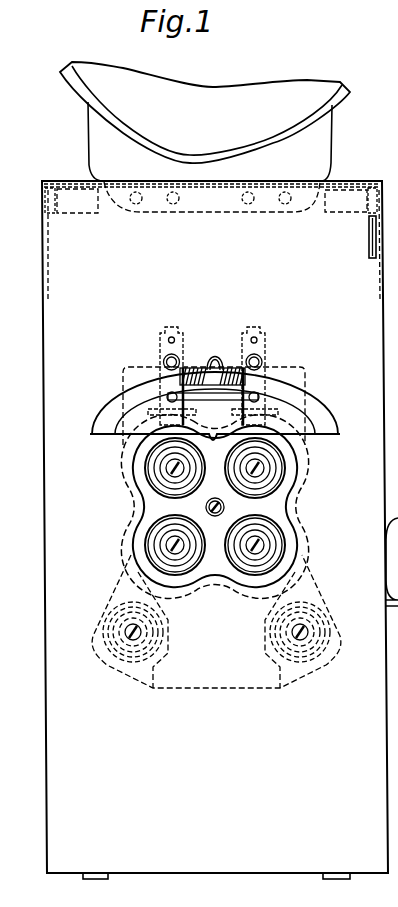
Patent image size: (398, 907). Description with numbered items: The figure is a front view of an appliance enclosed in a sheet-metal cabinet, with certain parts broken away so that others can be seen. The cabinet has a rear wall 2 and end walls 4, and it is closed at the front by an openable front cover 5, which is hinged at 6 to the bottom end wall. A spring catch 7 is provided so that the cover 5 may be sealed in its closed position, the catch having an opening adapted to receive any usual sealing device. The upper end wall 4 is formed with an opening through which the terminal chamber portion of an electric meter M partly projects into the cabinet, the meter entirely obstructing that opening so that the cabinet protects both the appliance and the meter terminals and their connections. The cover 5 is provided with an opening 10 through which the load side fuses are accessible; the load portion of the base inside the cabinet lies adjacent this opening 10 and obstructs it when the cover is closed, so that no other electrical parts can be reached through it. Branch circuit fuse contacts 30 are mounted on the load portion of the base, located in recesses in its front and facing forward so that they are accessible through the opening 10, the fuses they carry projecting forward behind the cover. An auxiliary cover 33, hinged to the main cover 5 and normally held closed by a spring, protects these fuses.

The electric meter M is at (205, 137).
The rear wall 2 is at (392, 513).
The end wall 4 is at (73, 184).
The front cover 5 is at (228, 750).
The hinge 6 is at (97, 880).
The spring catch 7 is at (368, 238).
The opening 10 is at (137, 492).
The contacts 30 is at (262, 468).
The auxiliary cover 33 is at (320, 413).